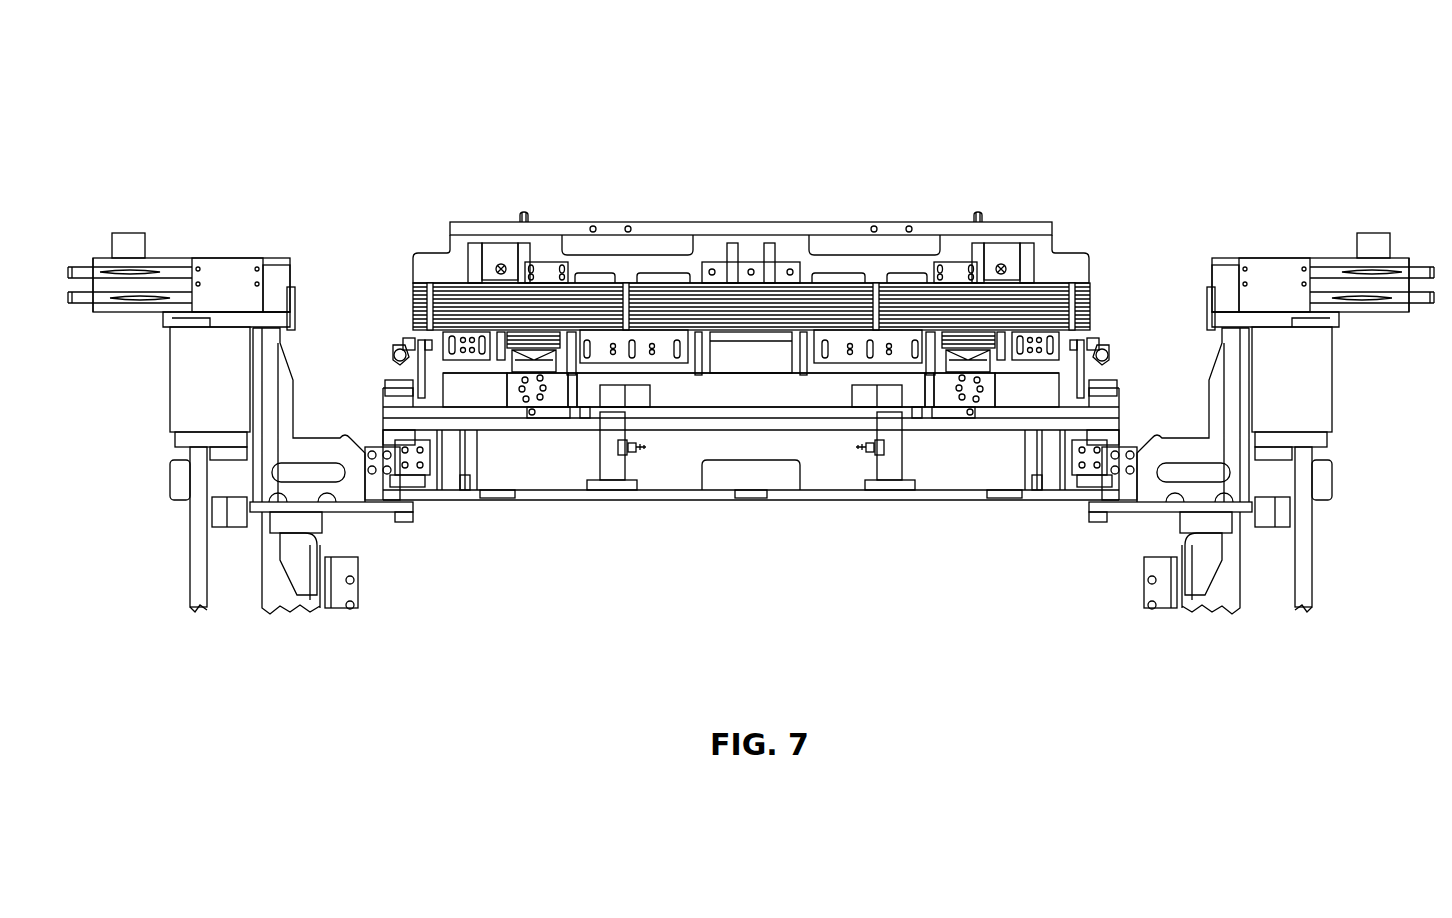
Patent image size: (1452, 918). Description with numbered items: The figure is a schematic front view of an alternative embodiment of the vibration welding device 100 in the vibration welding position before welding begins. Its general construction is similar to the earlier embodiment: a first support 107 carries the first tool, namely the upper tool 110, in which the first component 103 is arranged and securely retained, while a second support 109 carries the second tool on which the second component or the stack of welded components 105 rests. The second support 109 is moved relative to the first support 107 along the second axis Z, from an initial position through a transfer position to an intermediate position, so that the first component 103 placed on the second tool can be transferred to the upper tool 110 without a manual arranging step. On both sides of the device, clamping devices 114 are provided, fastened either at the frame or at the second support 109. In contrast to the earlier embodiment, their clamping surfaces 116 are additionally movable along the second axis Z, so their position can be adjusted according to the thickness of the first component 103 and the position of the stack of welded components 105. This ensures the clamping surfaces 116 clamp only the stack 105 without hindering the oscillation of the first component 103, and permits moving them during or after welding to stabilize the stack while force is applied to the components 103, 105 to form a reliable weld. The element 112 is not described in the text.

The vibration welding device 100 is at (1279, 117).
The first component 103 is at (1090, 288).
The stack of welded components 105 is at (1090, 310).
The first support 107 is at (553, 230).
The second support 109 is at (571, 493).
The upper tool 110 is at (1076, 268).
The support block 112 is at (800, 387).
The clamping device 114 is at (222, 273).
The clamping surface 116 is at (300, 305).